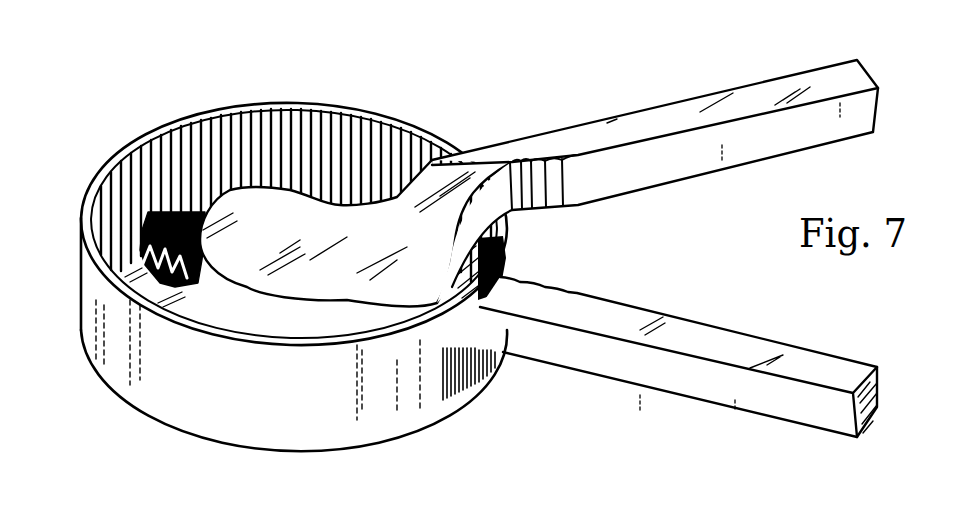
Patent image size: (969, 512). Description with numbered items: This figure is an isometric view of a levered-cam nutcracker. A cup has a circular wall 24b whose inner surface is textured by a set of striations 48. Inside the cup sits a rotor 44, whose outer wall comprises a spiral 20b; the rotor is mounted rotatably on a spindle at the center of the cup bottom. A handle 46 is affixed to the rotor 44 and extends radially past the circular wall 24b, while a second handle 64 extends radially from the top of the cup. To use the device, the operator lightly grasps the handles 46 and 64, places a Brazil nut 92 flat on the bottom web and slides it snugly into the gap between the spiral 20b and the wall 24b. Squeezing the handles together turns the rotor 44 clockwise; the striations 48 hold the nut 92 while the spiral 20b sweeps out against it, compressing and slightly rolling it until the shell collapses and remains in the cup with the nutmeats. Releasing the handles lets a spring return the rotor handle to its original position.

The spiral 20b is at (372, 313).
The circular wall 24b is at (213, 385).
The rotor 44 is at (277, 233).
The handle 46 is at (687, 160).
The striations 48 is at (340, 128).
The handle 64 is at (727, 340).
The Brazil nut 92 is at (150, 214).